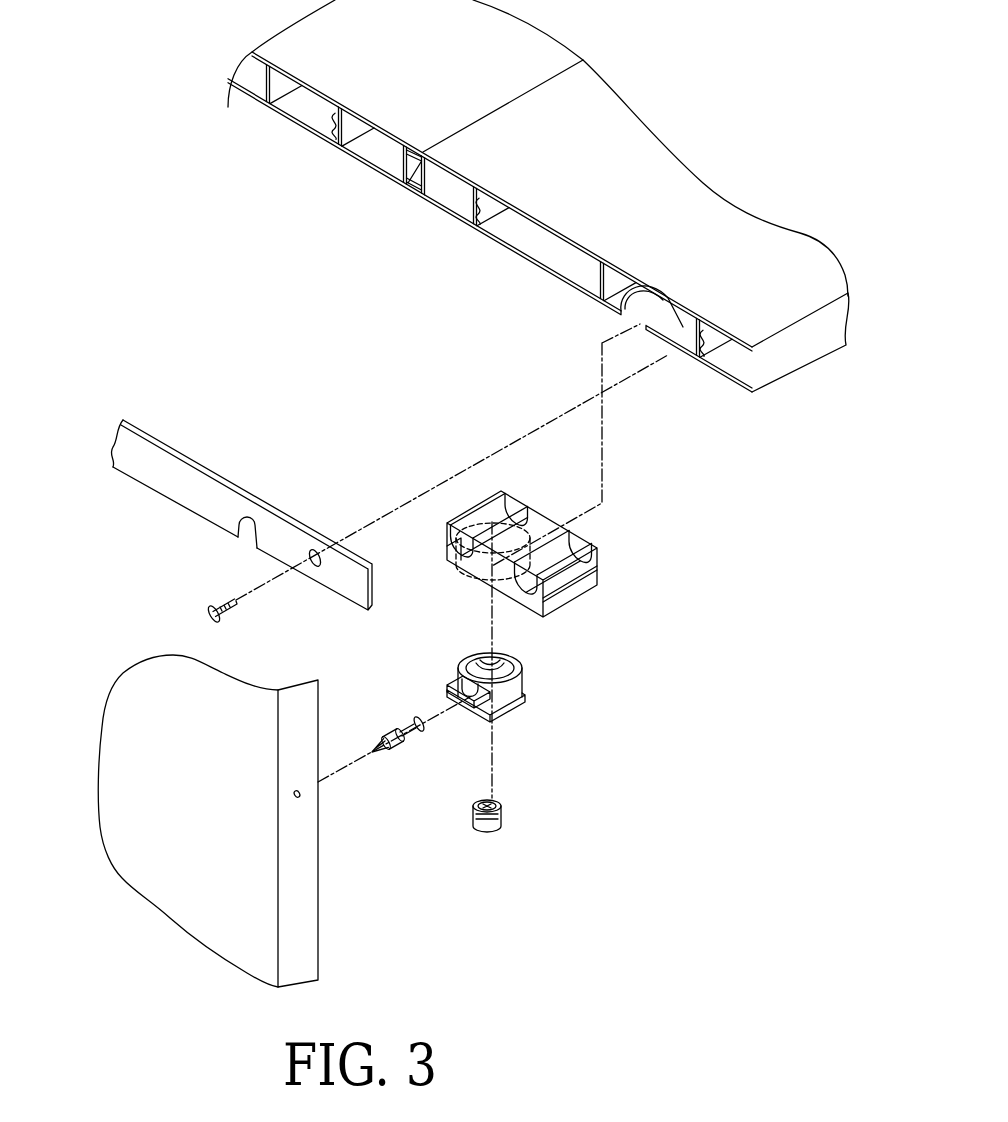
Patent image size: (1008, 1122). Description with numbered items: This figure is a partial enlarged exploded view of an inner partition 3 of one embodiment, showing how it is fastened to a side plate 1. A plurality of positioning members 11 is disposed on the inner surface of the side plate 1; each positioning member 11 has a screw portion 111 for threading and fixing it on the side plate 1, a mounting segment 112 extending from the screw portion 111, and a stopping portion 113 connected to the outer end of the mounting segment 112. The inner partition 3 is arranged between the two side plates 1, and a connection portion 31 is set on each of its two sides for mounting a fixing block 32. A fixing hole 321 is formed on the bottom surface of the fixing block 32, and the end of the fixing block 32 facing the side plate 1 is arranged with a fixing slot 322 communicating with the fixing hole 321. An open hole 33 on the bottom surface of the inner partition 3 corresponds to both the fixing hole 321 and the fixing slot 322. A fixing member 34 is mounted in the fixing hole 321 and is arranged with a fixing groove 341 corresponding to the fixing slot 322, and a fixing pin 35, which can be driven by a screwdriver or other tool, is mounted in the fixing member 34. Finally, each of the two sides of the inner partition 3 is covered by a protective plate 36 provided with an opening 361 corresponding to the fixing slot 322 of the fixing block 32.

The side plate 1 is at (305, 940).
The positioning member 11 is at (397, 775).
The screw portion 111 is at (383, 753).
The mounting segment 112 is at (405, 744).
The stopping portion 113 is at (420, 733).
The inner partition 3 is at (538, 230).
The connection portion 31 is at (680, 333).
The open hole 33 is at (645, 324).
The fixing block 32 is at (521, 559).
The fixing hole 321 is at (538, 503).
The fixing slot 322 is at (480, 572).
The fixing member 34 is at (534, 718).
The fixing groove 341 is at (470, 702).
The fixing pin 35 is at (502, 813).
The protective plate 36 is at (241, 522).
The opening 361 is at (247, 543).